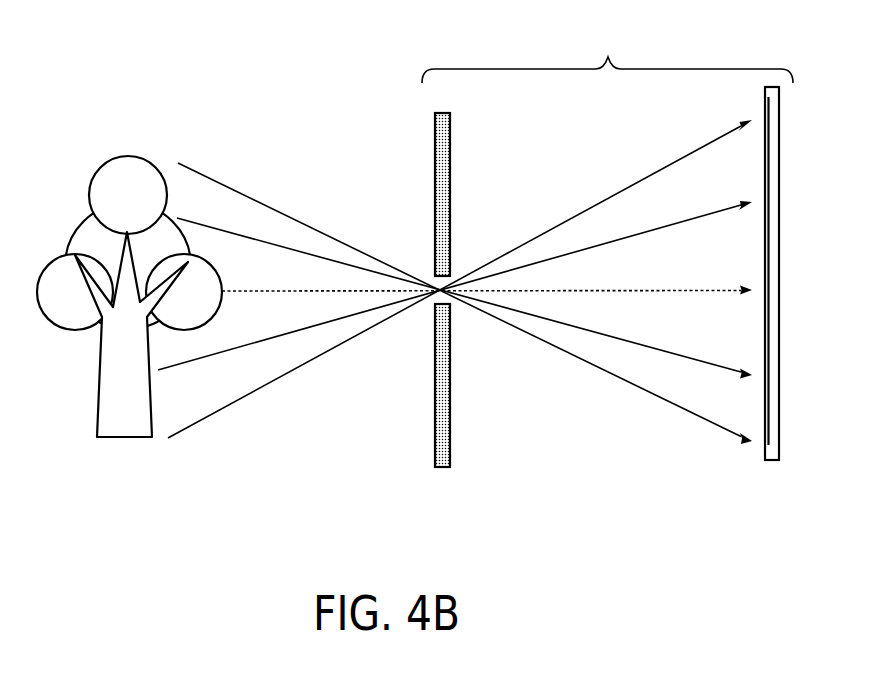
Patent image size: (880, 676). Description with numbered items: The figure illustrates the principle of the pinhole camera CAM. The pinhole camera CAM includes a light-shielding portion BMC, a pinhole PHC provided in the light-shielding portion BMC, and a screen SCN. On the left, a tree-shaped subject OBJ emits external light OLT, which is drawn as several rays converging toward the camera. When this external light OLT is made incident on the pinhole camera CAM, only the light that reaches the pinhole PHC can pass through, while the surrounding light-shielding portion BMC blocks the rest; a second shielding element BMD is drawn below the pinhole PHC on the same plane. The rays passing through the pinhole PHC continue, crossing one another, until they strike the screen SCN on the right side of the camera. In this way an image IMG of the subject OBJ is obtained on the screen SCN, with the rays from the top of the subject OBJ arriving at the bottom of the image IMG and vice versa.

The subject OBJ is at (122, 438).
The external light OLT is at (232, 188).
The pinhole camera CAM is at (607, 54).
The light-shielding portion BMC is at (435, 152).
The lower light-blocking barrier BMD is at (441, 468).
The pinhole PHC is at (443, 282).
The screen SCN is at (770, 462).
The image IMG is at (763, 441).